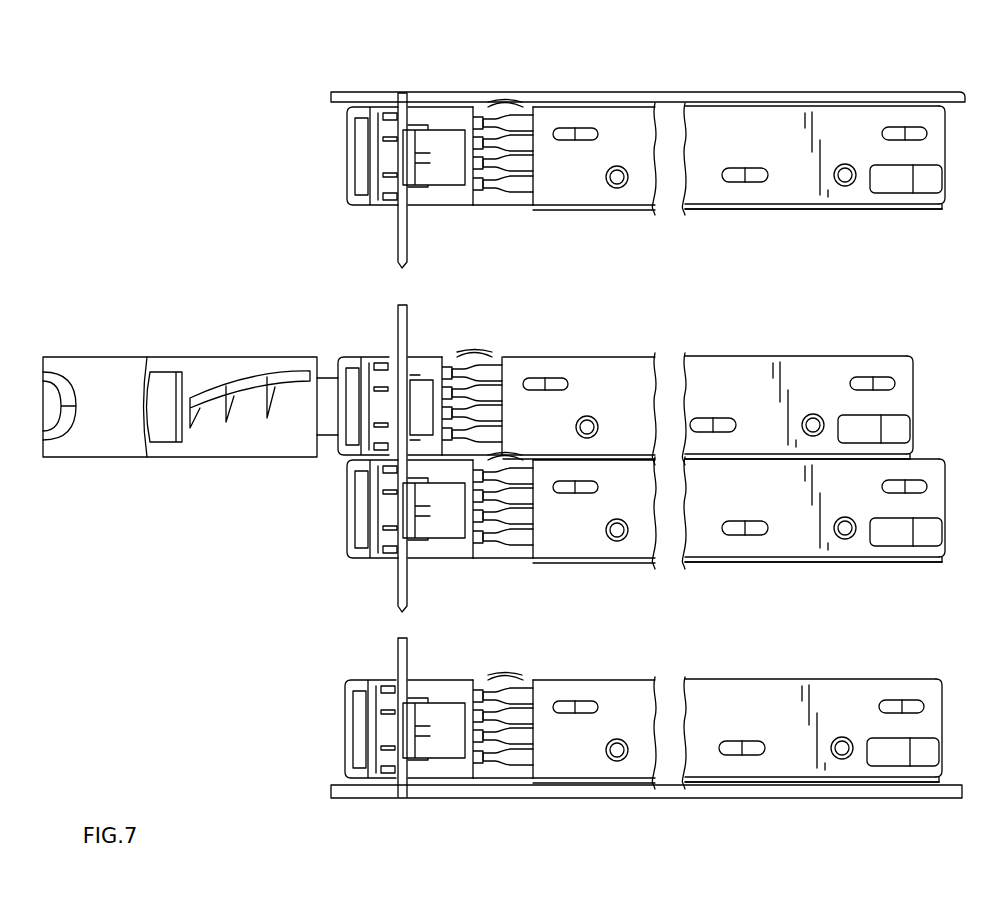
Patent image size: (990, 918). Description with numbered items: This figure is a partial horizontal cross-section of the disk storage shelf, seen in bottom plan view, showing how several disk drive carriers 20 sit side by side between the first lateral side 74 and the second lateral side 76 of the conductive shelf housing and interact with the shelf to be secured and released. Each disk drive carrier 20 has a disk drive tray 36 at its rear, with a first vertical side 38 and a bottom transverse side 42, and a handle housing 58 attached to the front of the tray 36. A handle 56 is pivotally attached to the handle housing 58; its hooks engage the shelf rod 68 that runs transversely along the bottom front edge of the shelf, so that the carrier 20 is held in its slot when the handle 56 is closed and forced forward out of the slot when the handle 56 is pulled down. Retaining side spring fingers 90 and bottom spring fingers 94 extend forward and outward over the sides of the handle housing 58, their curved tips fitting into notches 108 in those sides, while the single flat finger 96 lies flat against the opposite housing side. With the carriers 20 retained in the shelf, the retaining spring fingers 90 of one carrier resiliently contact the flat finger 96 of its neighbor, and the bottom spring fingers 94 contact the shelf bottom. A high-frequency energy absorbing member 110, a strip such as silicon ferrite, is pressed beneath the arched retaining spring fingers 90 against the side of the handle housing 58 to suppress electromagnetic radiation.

The disk drive carrier 20 is at (300, 125).
The disk drive tray 36 is at (640, 120).
The first vertical side 38 is at (718, 208).
The bottom transverse side 42 is at (740, 110).
The handle 56 is at (347, 145).
The handle housing 58 is at (430, 112).
The shelf rod 68 is at (399, 305).
The first lateral side 74 is at (582, 100).
The second lateral side 76 is at (590, 798).
The retaining side spring fingers 90 is at (493, 105).
The bottom spring fingers 94 is at (528, 117).
The flat finger 96 is at (500, 430).
The notches 108 is at (477, 120).
The high-frequency energy absorbing member 110 is at (515, 106).